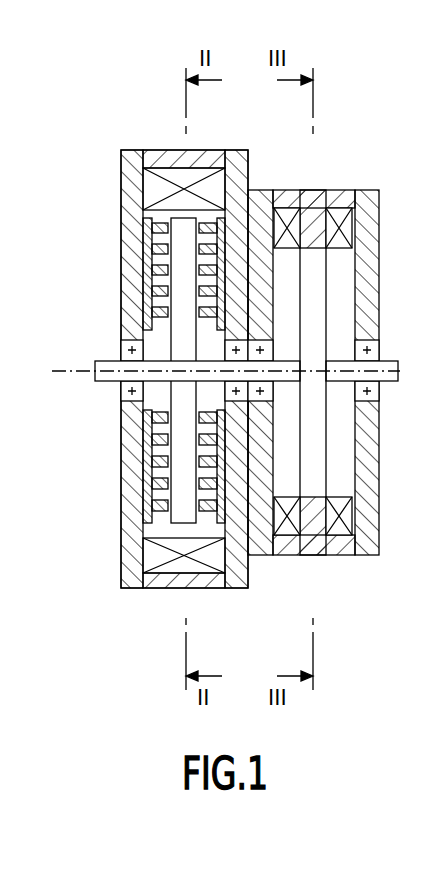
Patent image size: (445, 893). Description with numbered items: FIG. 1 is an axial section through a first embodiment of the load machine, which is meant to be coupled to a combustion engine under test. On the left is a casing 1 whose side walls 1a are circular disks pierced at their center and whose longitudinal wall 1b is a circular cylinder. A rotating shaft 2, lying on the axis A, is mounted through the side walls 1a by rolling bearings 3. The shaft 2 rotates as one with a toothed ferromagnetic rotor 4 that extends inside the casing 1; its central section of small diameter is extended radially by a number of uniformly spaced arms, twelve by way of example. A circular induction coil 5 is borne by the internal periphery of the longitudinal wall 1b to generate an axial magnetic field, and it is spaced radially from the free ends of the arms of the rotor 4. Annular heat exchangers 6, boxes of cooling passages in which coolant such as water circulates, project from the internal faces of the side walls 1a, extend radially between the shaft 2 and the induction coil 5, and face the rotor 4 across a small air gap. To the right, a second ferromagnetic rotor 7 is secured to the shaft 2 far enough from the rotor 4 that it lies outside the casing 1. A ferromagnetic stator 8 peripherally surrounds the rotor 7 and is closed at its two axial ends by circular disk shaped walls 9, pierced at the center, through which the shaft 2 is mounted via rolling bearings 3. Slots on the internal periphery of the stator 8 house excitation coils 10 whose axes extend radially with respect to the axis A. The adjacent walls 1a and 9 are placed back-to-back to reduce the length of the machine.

The casing 1 is at (118, 148).
The side walls 1a is at (130, 195).
The longitudinal wall 1b is at (170, 165).
The rotating shaft 2 is at (100, 367).
The rolling bearings 3 is at (123, 345).
The toothed ferromagnetic rotor 4 is at (185, 470).
The circular induction coil 5 is at (160, 556).
The annular heat exchanger 6 is at (150, 268).
The second rotor 7 is at (314, 298).
The stator 8 is at (333, 200).
The circular disk shaped walls 9 is at (372, 222).
The excitation coils 10 is at (340, 215).
The axis A is at (79, 378).